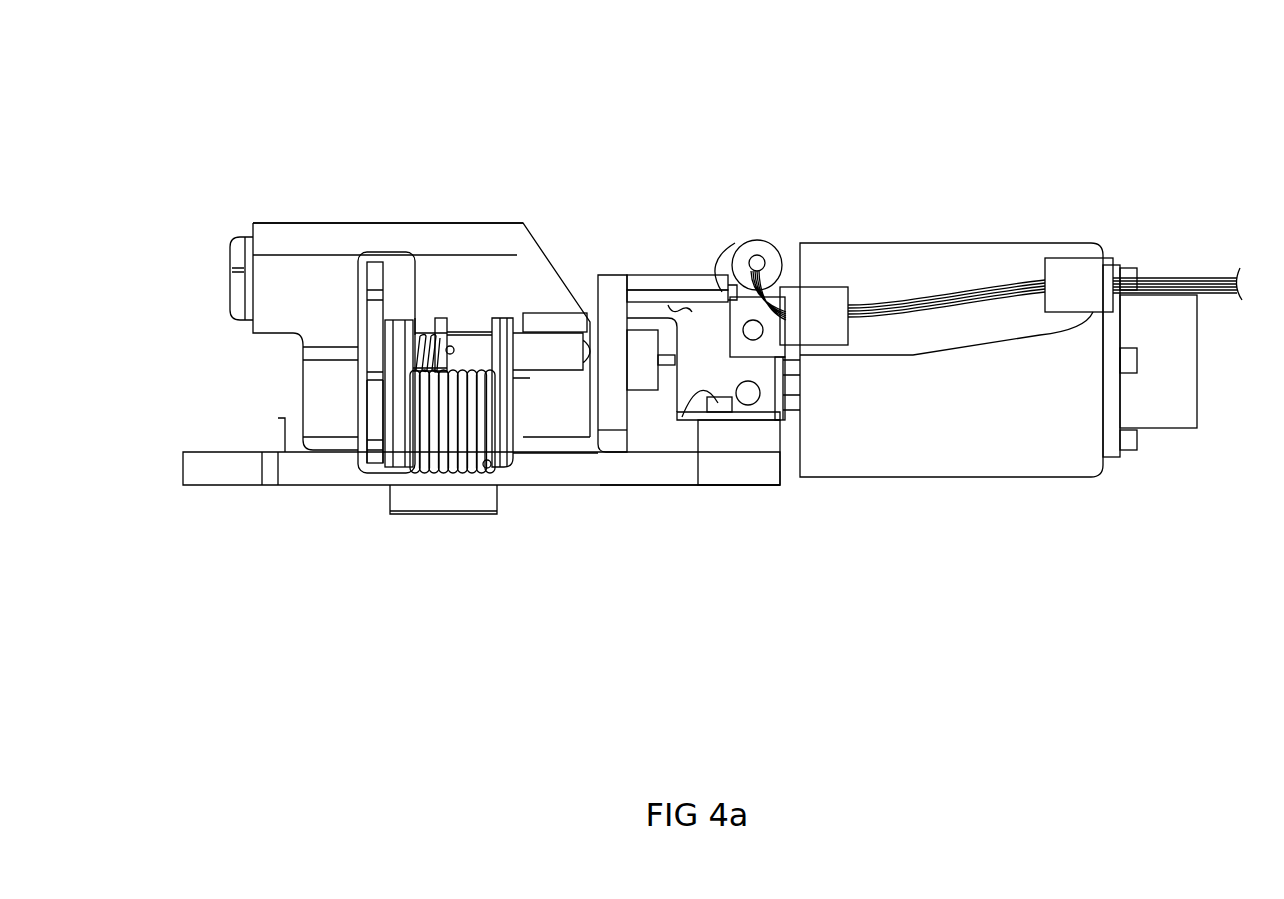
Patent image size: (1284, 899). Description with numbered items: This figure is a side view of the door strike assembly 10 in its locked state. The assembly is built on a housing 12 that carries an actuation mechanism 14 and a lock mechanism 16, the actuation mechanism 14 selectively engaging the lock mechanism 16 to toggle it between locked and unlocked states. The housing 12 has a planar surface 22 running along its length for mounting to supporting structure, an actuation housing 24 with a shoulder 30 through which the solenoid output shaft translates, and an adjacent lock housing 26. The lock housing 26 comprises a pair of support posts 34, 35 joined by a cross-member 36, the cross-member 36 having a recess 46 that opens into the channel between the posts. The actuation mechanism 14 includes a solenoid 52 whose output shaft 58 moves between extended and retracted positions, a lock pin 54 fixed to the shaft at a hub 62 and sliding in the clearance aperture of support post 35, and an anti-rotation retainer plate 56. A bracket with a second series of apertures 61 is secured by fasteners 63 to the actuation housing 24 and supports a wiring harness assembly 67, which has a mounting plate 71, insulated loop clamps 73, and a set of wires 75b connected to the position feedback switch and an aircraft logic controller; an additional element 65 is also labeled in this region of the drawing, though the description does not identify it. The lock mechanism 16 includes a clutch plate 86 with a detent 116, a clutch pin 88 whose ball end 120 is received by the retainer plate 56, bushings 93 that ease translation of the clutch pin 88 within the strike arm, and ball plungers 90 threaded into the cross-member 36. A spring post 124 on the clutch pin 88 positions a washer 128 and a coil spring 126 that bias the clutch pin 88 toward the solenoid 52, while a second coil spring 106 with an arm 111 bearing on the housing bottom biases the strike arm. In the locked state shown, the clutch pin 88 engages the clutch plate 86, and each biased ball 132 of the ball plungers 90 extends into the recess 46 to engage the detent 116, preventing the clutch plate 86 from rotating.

The door strike assembly 10 is at (1085, 47).
The housing 12 is at (197, 491).
The actuation mechanism 14 is at (1022, 519).
The lock mechanism 16 is at (530, 295).
The planar surface 22 is at (312, 490).
The actuation housing 24 is at (719, 490).
The lock housing 26 is at (341, 222).
The shoulder 30 is at (757, 452).
The support post 34 is at (310, 390).
The support post 35 is at (562, 413).
The cross-member 36 is at (277, 237).
The recess 46 is at (433, 318).
The solenoid 52 is at (1105, 246).
The lock pin 54 is at (597, 285).
The anti-rotation retainer plate 56 is at (617, 455).
The output shaft 58 is at (670, 362).
The apertures 61 is at (690, 308).
The hub 62 is at (645, 332).
The fasteners 63 is at (758, 338).
The bar 65 is at (629, 273).
The wiring harness assembly 67 is at (1231, 262).
The mounting plate 71 is at (985, 340).
The insulated loop clamps 73 is at (808, 302).
The wires 75b is at (723, 268).
The clutch plate 86 is at (373, 250).
The clutch pin 88 is at (543, 375).
The ball plungers 90 is at (232, 262).
The bushings 93 is at (362, 420).
The coil spring 106 is at (447, 476).
The spring arm 111 is at (487, 468).
The detent 116 is at (387, 300).
The ball end 120 is at (597, 285).
The spring post 124 is at (455, 330).
The coil spring 126 is at (452, 346).
The washer 128 is at (440, 372).
The ball 132 is at (368, 305).